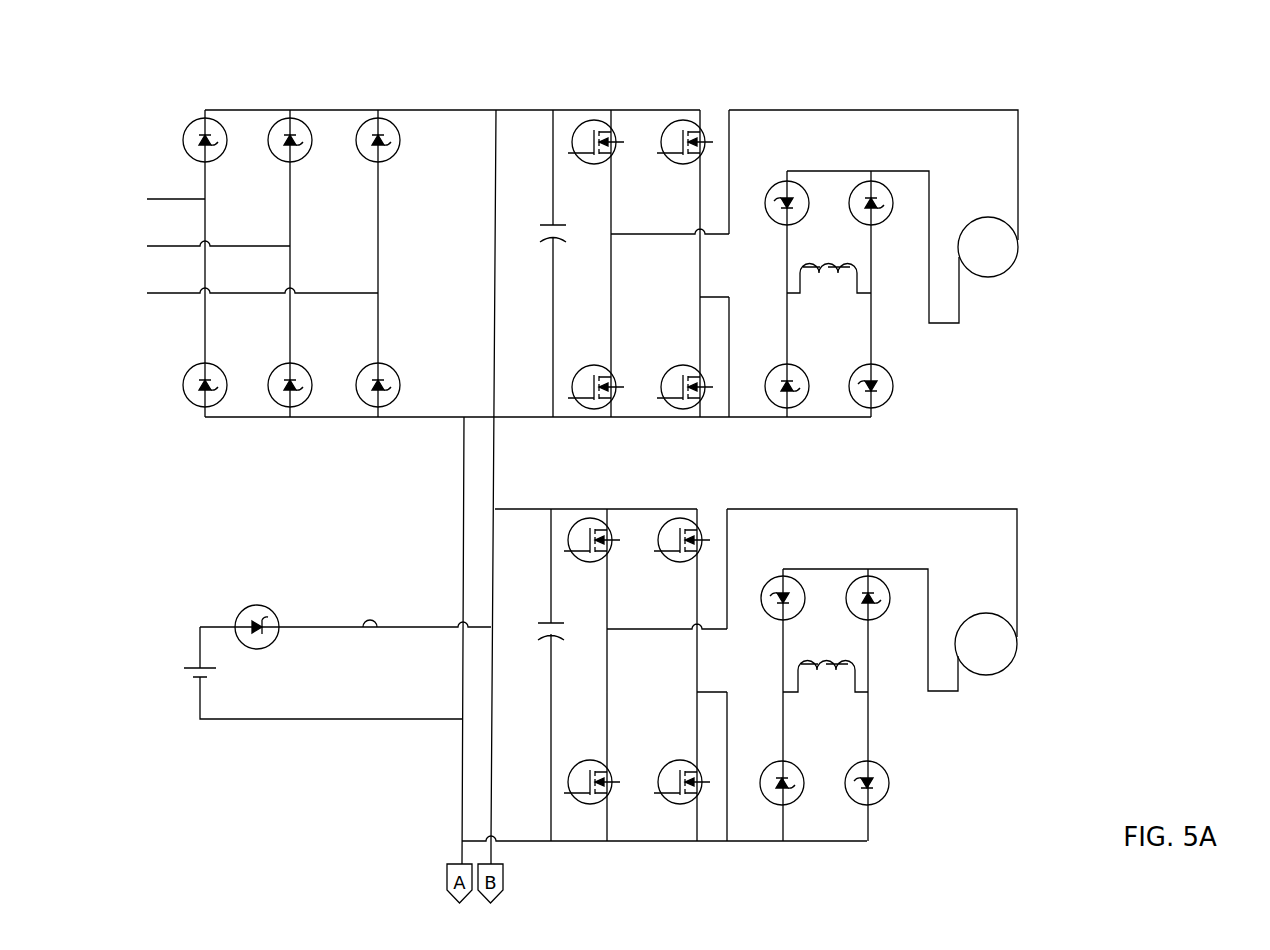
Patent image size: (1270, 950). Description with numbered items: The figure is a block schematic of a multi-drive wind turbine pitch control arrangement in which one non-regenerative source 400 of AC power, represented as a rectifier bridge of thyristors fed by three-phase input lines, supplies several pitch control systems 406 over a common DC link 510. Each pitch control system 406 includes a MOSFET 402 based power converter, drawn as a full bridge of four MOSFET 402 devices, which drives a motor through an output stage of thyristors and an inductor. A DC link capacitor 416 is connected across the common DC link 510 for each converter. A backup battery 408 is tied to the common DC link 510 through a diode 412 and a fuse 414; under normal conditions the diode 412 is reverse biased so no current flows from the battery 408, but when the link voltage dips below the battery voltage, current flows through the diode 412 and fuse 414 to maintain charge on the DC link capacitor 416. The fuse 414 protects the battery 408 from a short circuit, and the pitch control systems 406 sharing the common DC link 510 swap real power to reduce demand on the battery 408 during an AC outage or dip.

The non-regenerative source of AC power 400 is at (333, 101).
The common DC link 510 is at (452, 108).
The DC link capacitor 416 is at (547, 223).
The MOSFET 402 is at (614, 160).
The pitch control system 406 is at (570, 424).
The backup battery 408 is at (188, 663).
The diode 412 is at (277, 643).
The fuse 414 is at (382, 632).